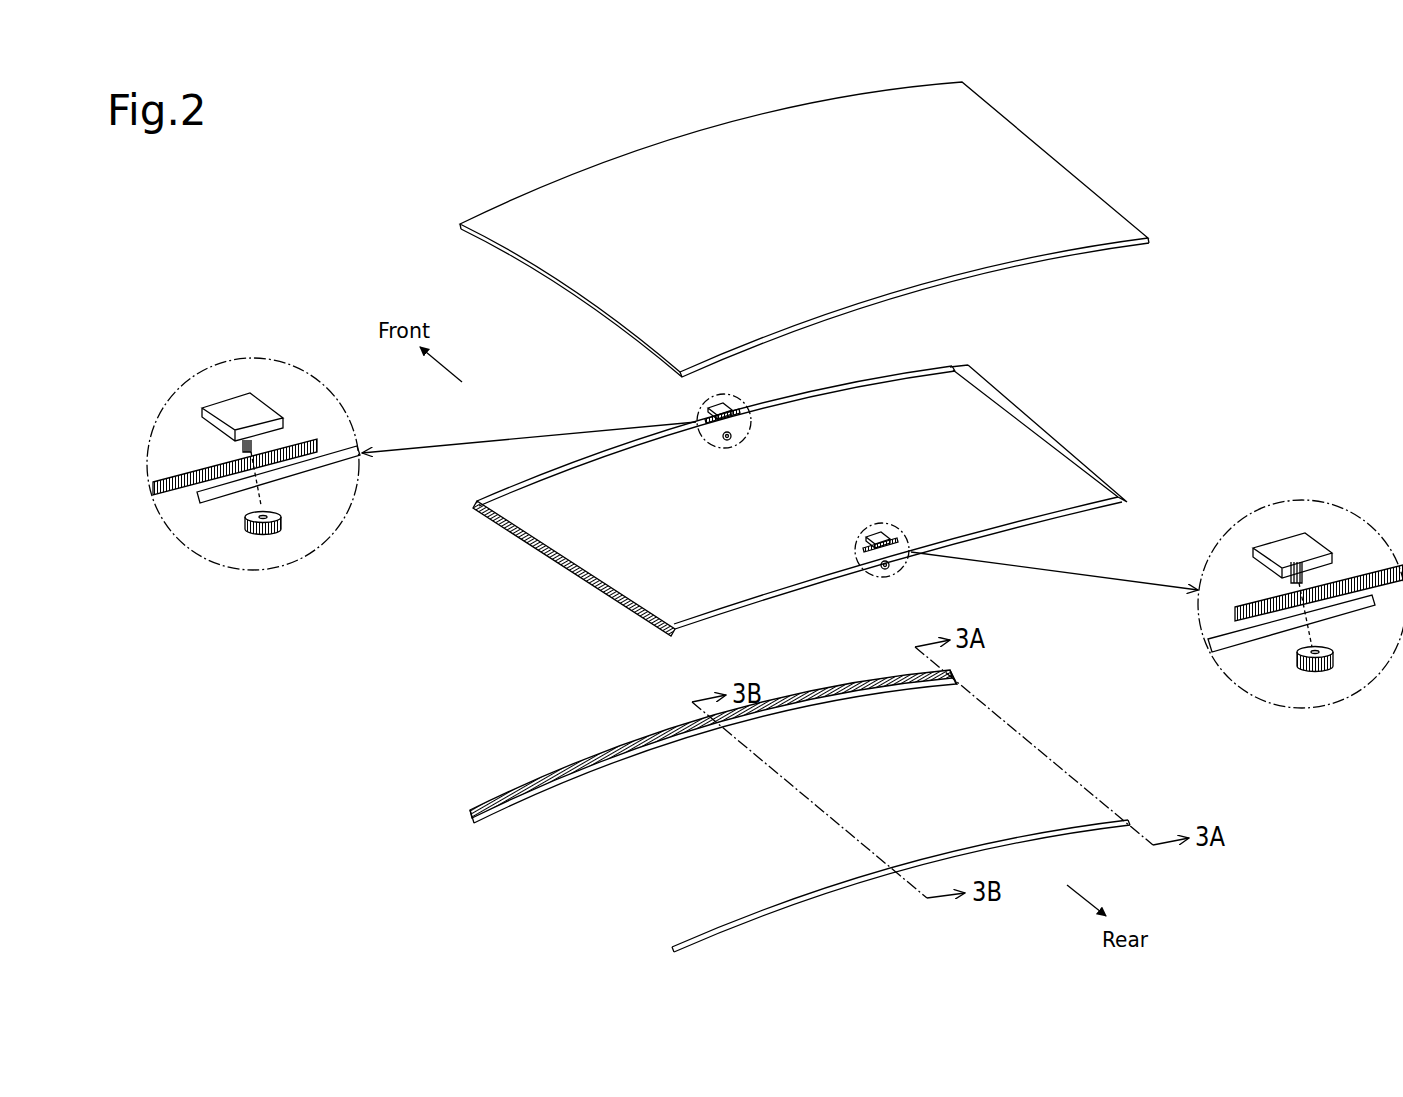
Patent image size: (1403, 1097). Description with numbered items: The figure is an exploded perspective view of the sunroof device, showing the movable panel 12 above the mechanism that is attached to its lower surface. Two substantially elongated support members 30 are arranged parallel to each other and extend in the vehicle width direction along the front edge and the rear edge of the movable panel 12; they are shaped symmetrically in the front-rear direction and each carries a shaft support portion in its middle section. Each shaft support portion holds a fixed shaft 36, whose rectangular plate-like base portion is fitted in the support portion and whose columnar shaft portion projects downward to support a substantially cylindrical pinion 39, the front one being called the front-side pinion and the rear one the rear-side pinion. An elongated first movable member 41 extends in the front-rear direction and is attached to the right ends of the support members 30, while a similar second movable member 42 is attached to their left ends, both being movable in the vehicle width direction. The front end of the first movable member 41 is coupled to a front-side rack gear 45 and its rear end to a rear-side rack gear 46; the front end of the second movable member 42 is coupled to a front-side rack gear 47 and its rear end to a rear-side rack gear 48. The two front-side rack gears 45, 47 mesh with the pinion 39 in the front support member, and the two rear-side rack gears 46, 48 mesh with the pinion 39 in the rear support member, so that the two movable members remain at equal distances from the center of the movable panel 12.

The movable panel 12 is at (1022, 153).
The support member 30 is at (658, 753).
The fixed shaft 36 is at (267, 398).
The pinion 39 is at (262, 533).
The first movable member 41 is at (1040, 417).
The second movable member 42 is at (561, 557).
The front-side rack gear 45 is at (888, 388).
The rear-side rack gear 46 is at (1057, 508).
The front-side rack gear 47 is at (642, 448).
The rear-side rack gear 48 is at (765, 596).